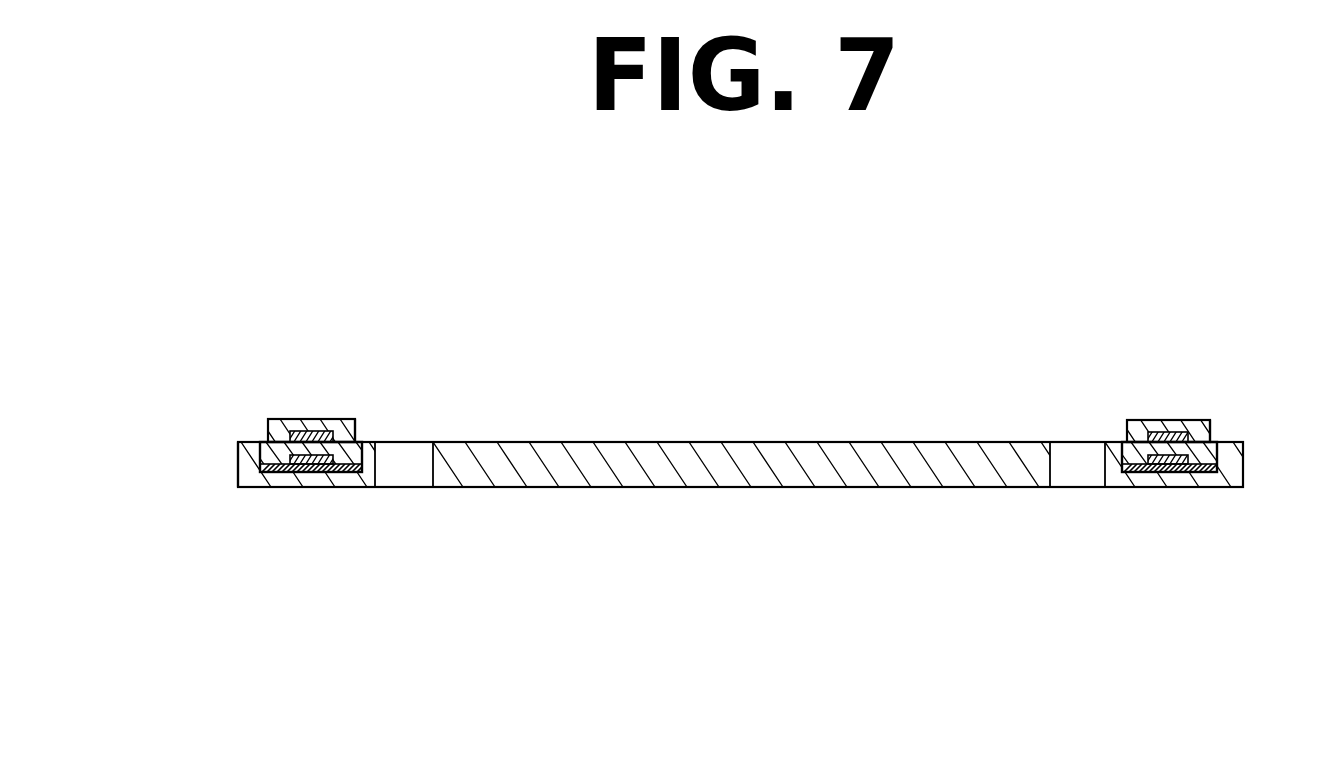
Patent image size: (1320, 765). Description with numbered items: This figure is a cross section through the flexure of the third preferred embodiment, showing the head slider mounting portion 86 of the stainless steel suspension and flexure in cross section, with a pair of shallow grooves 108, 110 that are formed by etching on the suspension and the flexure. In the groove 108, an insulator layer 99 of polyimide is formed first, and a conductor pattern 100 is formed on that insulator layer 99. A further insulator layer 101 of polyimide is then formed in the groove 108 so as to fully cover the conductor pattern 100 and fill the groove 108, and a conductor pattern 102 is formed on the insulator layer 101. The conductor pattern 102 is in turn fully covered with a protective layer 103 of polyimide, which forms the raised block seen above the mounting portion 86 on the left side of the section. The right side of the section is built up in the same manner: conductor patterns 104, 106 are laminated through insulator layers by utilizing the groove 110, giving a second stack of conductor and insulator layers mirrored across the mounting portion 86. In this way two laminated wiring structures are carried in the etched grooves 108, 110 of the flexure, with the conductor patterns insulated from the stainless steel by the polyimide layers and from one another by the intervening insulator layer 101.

The head slider mounting portion 86 is at (742, 443).
The insulator layer 99 is at (335, 473).
The conductor pattern 100 is at (267, 440).
The insulator layer 101 is at (238, 448).
The conductor pattern 102 is at (309, 418).
The protective layer 103 is at (273, 418).
The shallow groove 108 is at (353, 430).
The shallow groove 110 is at (1125, 427).
The conductor pattern 106 is at (1157, 421).
The conductor pattern 104 is at (1208, 437).